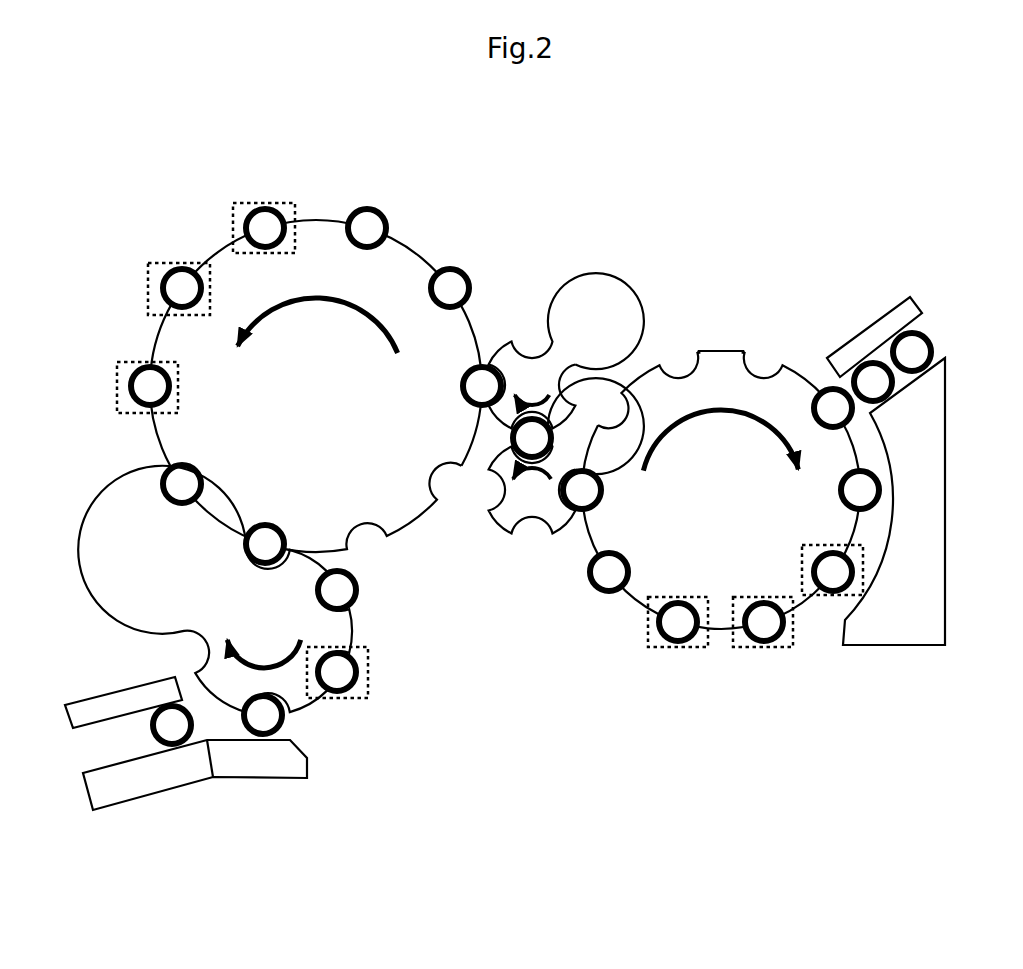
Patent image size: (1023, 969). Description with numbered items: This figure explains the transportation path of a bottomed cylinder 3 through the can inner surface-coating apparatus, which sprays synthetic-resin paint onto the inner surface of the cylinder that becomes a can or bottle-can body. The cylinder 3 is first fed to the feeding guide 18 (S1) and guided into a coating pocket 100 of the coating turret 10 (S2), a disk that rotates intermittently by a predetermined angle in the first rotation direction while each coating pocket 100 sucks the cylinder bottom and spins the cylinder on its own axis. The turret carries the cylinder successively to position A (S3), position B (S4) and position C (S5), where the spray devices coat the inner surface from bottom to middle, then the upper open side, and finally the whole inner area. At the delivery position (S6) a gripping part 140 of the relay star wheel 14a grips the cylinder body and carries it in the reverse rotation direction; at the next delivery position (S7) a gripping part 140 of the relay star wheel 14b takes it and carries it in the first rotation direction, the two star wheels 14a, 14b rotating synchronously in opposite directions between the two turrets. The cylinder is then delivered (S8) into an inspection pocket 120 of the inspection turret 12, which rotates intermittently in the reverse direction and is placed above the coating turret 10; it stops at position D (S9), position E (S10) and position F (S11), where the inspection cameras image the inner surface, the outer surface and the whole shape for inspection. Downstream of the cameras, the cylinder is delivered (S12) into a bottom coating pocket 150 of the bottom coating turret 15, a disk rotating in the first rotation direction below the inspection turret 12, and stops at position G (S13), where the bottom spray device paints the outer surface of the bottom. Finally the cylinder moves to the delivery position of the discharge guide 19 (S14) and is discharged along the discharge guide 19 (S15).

The bottomed cylinder 3 is at (468, 274).
The coating turret 10 is at (722, 350).
The inspection turret 12 is at (427, 263).
The relay star wheel 14a is at (542, 503).
The relay star wheel 14b is at (527, 372).
The bottom coating turret 15 is at (313, 632).
The feeding guide 18 is at (940, 332).
The discharge guide 19 is at (98, 743).
The coating pocket 100 is at (730, 449).
The inspection pocket 120 is at (316, 401).
The gripping part 140 is at (539, 422).
The bottom coating pocket 150 is at (251, 589).
The step of feeding to the feeding guide S1 is at (934, 352).
The step of guiding to the coating pocket S2 is at (812, 407).
The step of stopping at position A S3 is at (855, 570).
The step of stopping at position B S4 is at (763, 647).
The step of stopping at position C S5 is at (678, 647).
The step of delivery to relay star wheel 14a S6 is at (604, 489).
The step of delivery to relay star wheel 14b S7 is at (555, 436).
The step of delivery to the inspection turret S8 is at (460, 388).
The step of stopping at position D S9 is at (263, 206).
The step of stopping at position E S10 is at (180, 267).
The step of stopping at position F S11 is at (146, 365).
The step of delivery to the bottom coating turret S12 is at (266, 523).
The step of stopping at position G S13 is at (352, 694).
The step of delivery to the discharge guide S14 is at (270, 737).
The step of discharging S15 is at (190, 745).